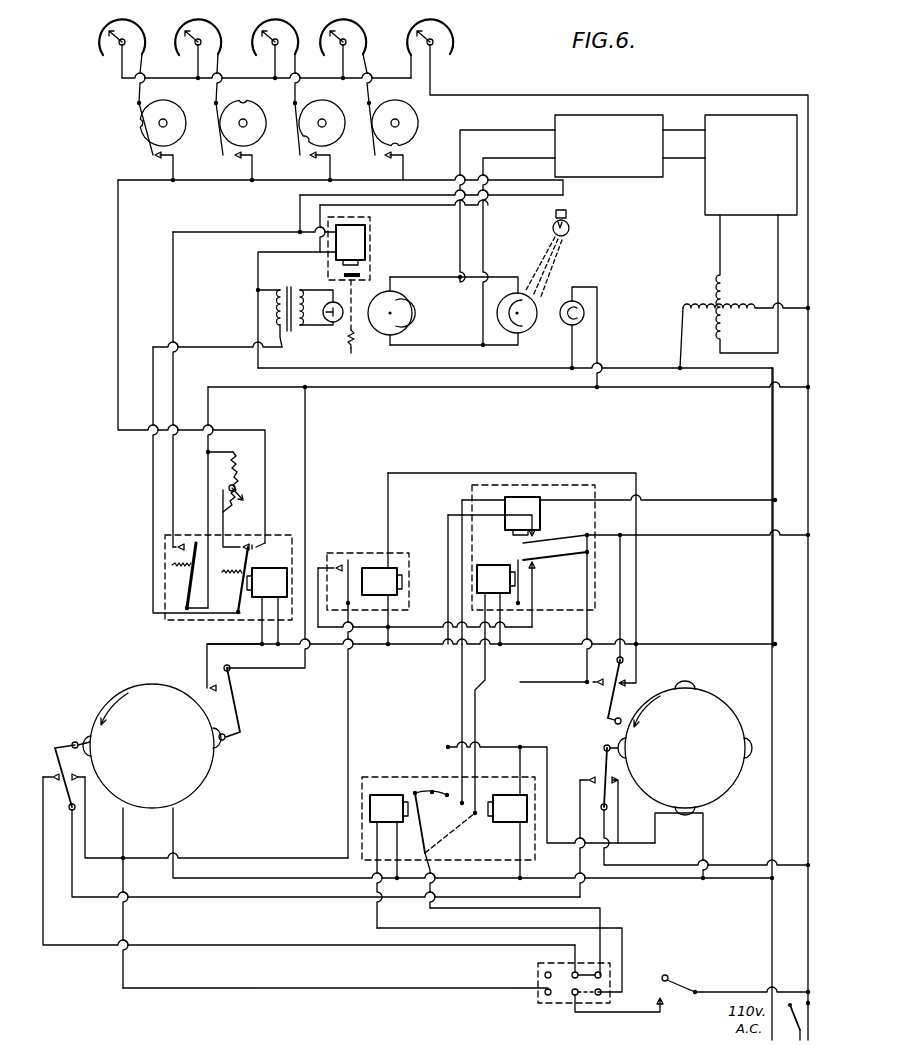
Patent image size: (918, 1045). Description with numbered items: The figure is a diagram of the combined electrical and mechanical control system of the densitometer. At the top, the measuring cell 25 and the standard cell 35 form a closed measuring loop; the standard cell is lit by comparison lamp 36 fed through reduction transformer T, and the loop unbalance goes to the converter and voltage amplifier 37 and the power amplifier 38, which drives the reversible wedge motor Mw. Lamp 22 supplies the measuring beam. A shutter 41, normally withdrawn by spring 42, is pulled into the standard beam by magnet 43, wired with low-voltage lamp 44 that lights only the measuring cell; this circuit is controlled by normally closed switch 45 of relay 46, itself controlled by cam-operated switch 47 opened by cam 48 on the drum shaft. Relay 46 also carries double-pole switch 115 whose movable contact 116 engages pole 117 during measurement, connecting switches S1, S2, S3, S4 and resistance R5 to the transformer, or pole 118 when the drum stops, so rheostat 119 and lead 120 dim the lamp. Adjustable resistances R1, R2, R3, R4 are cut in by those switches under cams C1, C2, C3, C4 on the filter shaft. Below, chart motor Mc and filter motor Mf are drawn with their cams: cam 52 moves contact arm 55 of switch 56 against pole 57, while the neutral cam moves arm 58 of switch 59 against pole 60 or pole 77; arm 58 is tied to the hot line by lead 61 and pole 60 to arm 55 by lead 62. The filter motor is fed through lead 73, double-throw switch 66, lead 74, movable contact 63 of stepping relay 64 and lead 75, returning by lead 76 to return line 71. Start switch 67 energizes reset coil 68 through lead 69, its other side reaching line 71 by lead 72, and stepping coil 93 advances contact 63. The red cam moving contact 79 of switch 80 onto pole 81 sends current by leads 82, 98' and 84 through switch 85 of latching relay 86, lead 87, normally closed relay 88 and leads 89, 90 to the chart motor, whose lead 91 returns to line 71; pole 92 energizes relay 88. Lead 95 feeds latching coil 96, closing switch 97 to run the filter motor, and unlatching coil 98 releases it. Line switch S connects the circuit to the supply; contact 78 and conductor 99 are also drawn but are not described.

The adjustable resistance R1 is at (324, 56).
The adjustable resistance R2 is at (256, 56).
The adjustable resistance R3 is at (179, 56).
The adjustable resistance R4 is at (103, 56).
The adjustable resistance R5 is at (450, 56).
The cam C1 is at (418, 122).
The cam C2 is at (338, 113).
The cam C3 is at (259, 113).
The cam C4 is at (178, 113).
The switch S1 is at (380, 160).
The switch S2 is at (305, 160).
The switch S3 is at (228, 160).
The switch S4 is at (147, 162).
The combined converter and voltage amplifier 37 is at (630, 178).
The power amplifier 38 is at (705, 207).
The magnet 43 is at (371, 240).
The spring 42 is at (348, 346).
The shutter 41 is at (356, 336).
The low-voltage lamp 44 is at (570, 229).
The lamp 22 is at (572, 288).
The reduction transformer T is at (293, 289).
The standard lamp 36 is at (330, 324).
The standard light-sensitive cell 35 is at (404, 306).
The measuring light-sensitive cell 25 is at (527, 324).
The two-phase reversible induction motor Mw is at (708, 304).
The lead line 120 is at (385, 388).
The rheostat 119 is at (240, 476).
The pole 118 is at (246, 518).
The pole 117 is at (260, 546).
The double-pole switch 115 is at (204, 576).
The movable contact 116 is at (242, 588).
The normally closed switch 45 is at (180, 542).
The relay 46 is at (262, 604).
The lead wire 87 is at (320, 568).
The normally closed relay 88 is at (392, 566).
The lead 89 is at (349, 740).
The latching coil 96 is at (530, 496).
The lead wire 95 is at (462, 504).
The switch 97 is at (524, 542).
The unlatching coil 98 is at (498, 593).
The switch 85 is at (539, 564).
The latching relay 86 is at (544, 608).
The lead 82 is at (618, 622).
The lead 98' is at (698, 553).
The chart motor Mc is at (112, 696).
The cam-operated switch 47 is at (228, 692).
The cam 48 is at (216, 750).
The cam 52 is at (77, 742).
The pole 57 is at (52, 772).
The contact 78 is at (74, 775).
The contact arm 55 is at (69, 808).
The double pole switch 56 is at (88, 824).
The lead 90 is at (125, 835).
The lead 91 is at (175, 825).
The lead wire 62 is at (252, 898).
The return line 71 is at (642, 880).
The lead 73 is at (372, 946).
The conductor 99 is at (390, 989).
The stepping relay 64 is at (396, 777).
The reset coil 68 is at (380, 794).
The movable contact 63 is at (436, 840).
The lead 72 is at (404, 830).
The stepping coil 93 is at (506, 823).
The lead 75 is at (498, 747).
The lead 84 is at (584, 670).
The pole 81 is at (596, 686).
The movable contact 79 is at (606, 708).
The switch 80 is at (621, 708).
The pole 92 is at (630, 683).
The filter motor Mf is at (724, 782).
The contact arm 58 is at (598, 760).
The pole 60 is at (588, 776).
The double pole switch 59 is at (600, 816).
The pole 77 is at (620, 788).
The lead 76 is at (704, 830).
The lead 61 is at (692, 864).
The lead 69 is at (372, 919).
The lead 74 is at (608, 914).
The double-pole double-throw switch 66 is at (537, 976).
The hand switch 67 is at (668, 996).
The line switch S is at (796, 1024).